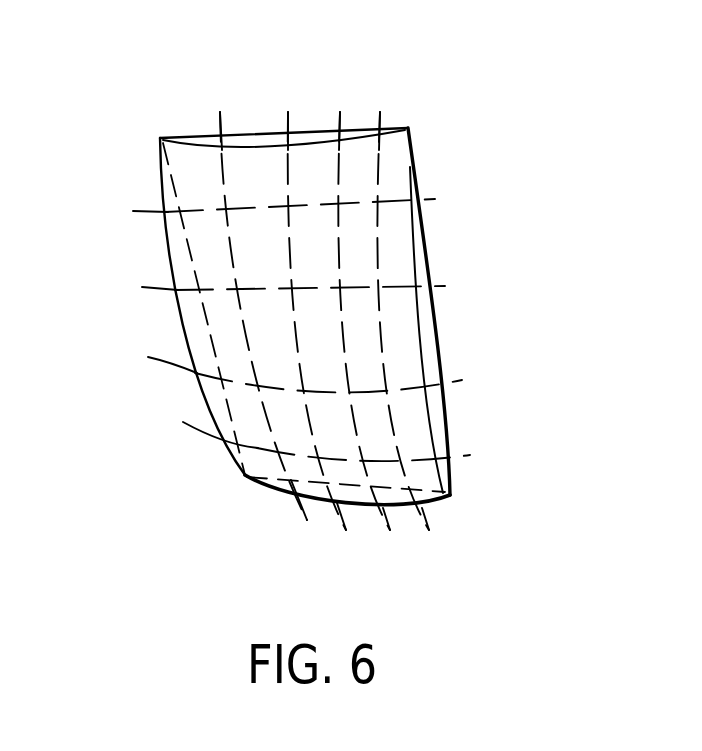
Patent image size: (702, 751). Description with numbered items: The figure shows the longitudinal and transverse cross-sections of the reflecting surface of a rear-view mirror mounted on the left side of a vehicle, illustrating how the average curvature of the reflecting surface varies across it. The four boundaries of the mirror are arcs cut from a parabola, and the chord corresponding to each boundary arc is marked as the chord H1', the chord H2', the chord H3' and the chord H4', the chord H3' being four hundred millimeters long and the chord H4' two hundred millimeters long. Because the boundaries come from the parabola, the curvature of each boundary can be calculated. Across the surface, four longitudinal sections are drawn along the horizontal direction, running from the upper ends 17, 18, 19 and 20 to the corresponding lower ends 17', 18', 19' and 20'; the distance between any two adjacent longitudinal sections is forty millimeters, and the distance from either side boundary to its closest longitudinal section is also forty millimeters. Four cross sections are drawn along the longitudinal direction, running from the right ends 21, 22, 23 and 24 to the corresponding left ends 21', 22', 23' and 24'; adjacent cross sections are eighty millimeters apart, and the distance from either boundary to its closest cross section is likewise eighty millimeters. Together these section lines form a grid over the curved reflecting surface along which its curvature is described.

The longitudinal section line end 17 is at (397, 305).
The longitudinal section line end 18 is at (359, 305).
The longitudinal section line end 19 is at (310, 305).
The longitudinal section line end 20 is at (255, 300).
The cross section line end 21 is at (318, 197).
The cross section line end 22 is at (328, 287).
The cross section line end 23 is at (348, 382).
The cross section line end 24 is at (384, 457).
The longitudinal section line end 17' is at (436, 535).
The longitudinal section line end 18' is at (396, 535).
The longitudinal section line end 19' is at (352, 532).
The longitudinal section line end 20' is at (308, 514).
The cross section line end 21' is at (133, 212).
The cross section line end 22' is at (137, 287).
The cross section line end 23' is at (150, 358).
The cross section line end 24' is at (198, 428).
The chord H1' is at (183, 473).
The chord H2' is at (247, 535).
The chord H3' is at (598, 292).
The chord H4' is at (264, 73).